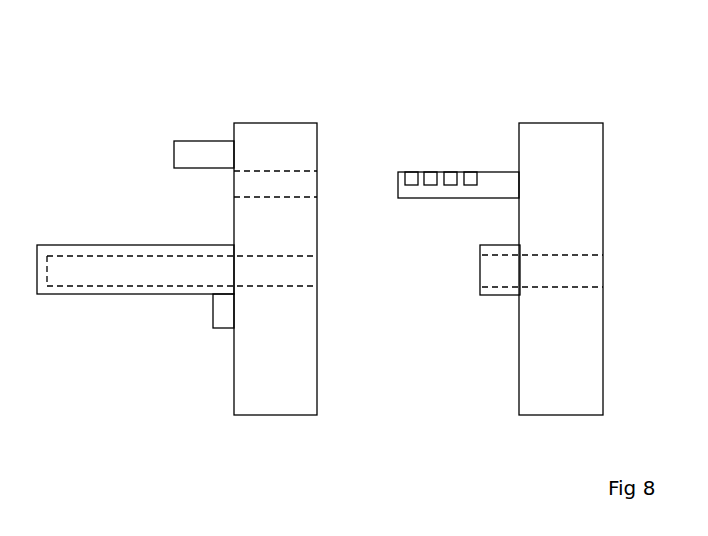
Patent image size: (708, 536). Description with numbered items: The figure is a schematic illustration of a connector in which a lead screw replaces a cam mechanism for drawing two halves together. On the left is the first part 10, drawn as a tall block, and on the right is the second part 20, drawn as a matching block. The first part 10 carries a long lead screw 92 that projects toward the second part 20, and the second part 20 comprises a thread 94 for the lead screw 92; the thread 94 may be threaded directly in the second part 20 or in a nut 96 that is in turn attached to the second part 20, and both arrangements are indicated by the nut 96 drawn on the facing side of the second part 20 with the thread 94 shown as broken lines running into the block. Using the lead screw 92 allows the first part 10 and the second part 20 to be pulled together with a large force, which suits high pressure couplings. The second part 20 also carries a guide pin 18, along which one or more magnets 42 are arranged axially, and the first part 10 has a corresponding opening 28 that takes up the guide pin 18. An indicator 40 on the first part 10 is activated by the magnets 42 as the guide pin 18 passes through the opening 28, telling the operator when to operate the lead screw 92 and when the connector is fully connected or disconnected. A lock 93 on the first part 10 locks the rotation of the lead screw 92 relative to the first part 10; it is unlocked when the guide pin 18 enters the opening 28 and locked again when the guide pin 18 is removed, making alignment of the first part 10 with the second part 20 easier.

The first part 10 is at (278, 396).
The second part 20 is at (554, 396).
The guide pin 18 is at (497, 186).
The opening 28 is at (291, 183).
The indicator 40 is at (194, 157).
The magnets 42 is at (408, 178).
The lead screw 92 is at (88, 276).
The lock 93 is at (226, 325).
The thread 94 is at (596, 255).
The nut 96 is at (488, 295).